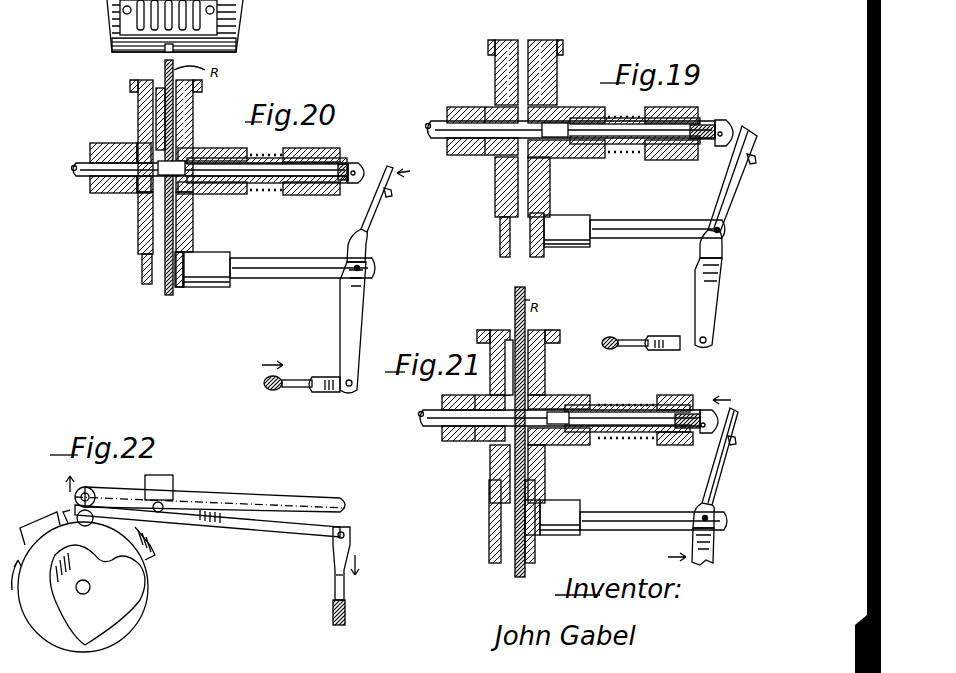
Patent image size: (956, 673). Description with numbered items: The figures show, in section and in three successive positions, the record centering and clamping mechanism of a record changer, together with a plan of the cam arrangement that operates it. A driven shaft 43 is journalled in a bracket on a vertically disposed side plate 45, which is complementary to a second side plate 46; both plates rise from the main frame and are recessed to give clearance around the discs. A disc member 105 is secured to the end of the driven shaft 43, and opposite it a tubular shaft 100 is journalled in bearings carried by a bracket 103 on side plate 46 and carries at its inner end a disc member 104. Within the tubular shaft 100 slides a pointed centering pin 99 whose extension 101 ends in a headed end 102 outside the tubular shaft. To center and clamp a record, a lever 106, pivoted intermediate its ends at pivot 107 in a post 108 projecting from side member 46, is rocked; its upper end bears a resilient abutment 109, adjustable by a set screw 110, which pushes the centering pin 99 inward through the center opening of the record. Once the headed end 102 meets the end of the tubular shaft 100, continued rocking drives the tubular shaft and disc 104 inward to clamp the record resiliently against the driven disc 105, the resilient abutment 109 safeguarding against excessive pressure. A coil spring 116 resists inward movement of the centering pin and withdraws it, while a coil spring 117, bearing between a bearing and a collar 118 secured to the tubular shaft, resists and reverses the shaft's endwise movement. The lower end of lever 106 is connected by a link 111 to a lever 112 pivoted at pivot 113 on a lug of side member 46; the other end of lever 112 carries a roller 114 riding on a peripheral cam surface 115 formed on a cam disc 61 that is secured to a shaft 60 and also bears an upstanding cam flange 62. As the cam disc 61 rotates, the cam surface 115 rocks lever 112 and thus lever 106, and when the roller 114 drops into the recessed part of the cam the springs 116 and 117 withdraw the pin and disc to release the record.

In FIG. 20, the driven shaft 43 is at (80, 160).
In FIG. 19, the driven shaft 43 is at (436, 120).
In FIG. 21, the driven shaft 43 is at (424, 427).
In FIG. 20, the side plate 45 is at (138, 226).
In FIG. 19, the side plate 45 is at (496, 197).
In FIG. 21, the side plate 45 is at (489, 543).
In FIG. 20, the side plate 46 is at (190, 236).
In FIG. 19, the side plate 46 is at (548, 197).
In FIG. 21, the side plate 46 is at (536, 549).
In FIG. 22, the shaft 60 is at (90, 588).
In FIG. 22, the cam disc 61 is at (120, 610).
In FIG. 22, the cam flange 62 is at (66, 640).
In FIG. 20, the centering pin 99 is at (178, 176).
In FIG. 19, the centering pin 99 is at (553, 122).
In FIG. 21, the centering pin 99 is at (538, 402).
In FIG. 20, the tubular shaft 100 is at (224, 148).
In FIG. 19, the tubular shaft 100 is at (588, 110).
In FIG. 21, the tubular shaft 100 is at (585, 400).
In FIG. 20, the extension 101 is at (268, 158).
In FIG. 19, the extension 101 is at (622, 128).
In FIG. 21, the extension 101 is at (610, 420).
In FIG. 20, the headed end 102 is at (355, 163).
In FIG. 19, the headed end 102 is at (724, 120).
In FIG. 21, the headed end 102 is at (706, 410).
In FIG. 20, the bracket 103 is at (234, 194).
In FIG. 19, the bracket 103 is at (578, 158).
In FIG. 21, the bracket 103 is at (572, 445).
In FIG. 20, the disc member 104 is at (190, 108).
In FIG. 19, the disc member 104 is at (550, 62).
In FIG. 21, the disc member 104 is at (540, 364).
In FIG. 20, the disc member 105 is at (140, 112).
In FIG. 19, the disc member 105 is at (497, 76).
In FIG. 21, the disc member 105 is at (492, 380).
In FIG. 20, the lever 106 is at (362, 305).
In FIG. 19, the lever 106 is at (712, 266).
In FIG. 21, the lever 106 is at (714, 548).
In FIG. 22, the lever 106 is at (333, 605).
In FIG. 20, the pivot 107 is at (370, 270).
In FIG. 19, the pivot 107 is at (724, 230).
In FIG. 21, the pivot 107 is at (712, 515).
In FIG. 20, the post 108 is at (268, 279).
In FIG. 19, the post 108 is at (636, 220).
In FIG. 21, the post 108 is at (670, 505).
In FIG. 20, the resilient abutment 109 is at (388, 165).
In FIG. 19, the resilient abutment 109 is at (748, 127).
In FIG. 21, the resilient abutment 109 is at (735, 409).
In FIG. 20, the set screw 110 is at (390, 196).
In FIG. 19, the set screw 110 is at (752, 165).
In FIG. 21, the set screw 110 is at (737, 441).
In FIG. 20, the link 111 is at (325, 376).
In FIG. 19, the link 111 is at (668, 335).
In FIG. 22, the link 111 is at (346, 592).
In FIG. 20, the lever 112 is at (262, 385).
In FIG. 19, the lever 112 is at (604, 345).
In FIG. 22, the lever 112 is at (254, 535).
In FIG. 22, the pivot 113 is at (178, 500).
In FIG. 22, the roller 114 is at (84, 487).
In FIG. 22, the cam surface 115 is at (155, 505).
In FIG. 20, the coil spring 116 is at (345, 181).
In FIG. 19, the coil spring 116 is at (705, 124).
In FIG. 21, the coil spring 116 is at (682, 410).
In FIG. 20, the coil spring 117 is at (268, 195).
In FIG. 19, the coil spring 117 is at (630, 160).
In FIG. 21, the coil spring 117 is at (628, 400).
In FIG. 20, the collar 118 is at (293, 148).
In FIG. 19, the collar 118 is at (652, 112).
In FIG. 21, the collar 118 is at (640, 445).